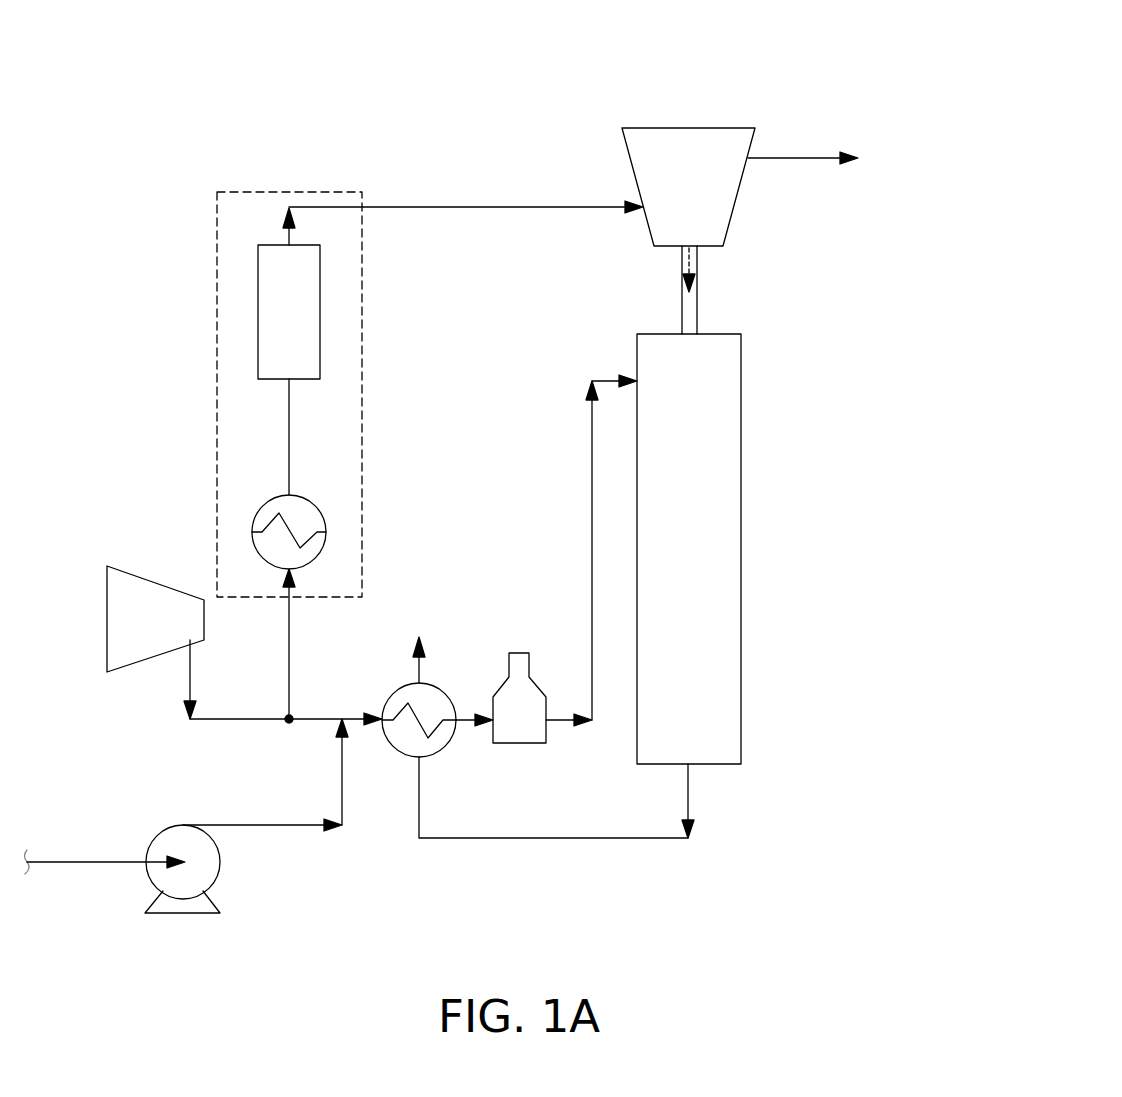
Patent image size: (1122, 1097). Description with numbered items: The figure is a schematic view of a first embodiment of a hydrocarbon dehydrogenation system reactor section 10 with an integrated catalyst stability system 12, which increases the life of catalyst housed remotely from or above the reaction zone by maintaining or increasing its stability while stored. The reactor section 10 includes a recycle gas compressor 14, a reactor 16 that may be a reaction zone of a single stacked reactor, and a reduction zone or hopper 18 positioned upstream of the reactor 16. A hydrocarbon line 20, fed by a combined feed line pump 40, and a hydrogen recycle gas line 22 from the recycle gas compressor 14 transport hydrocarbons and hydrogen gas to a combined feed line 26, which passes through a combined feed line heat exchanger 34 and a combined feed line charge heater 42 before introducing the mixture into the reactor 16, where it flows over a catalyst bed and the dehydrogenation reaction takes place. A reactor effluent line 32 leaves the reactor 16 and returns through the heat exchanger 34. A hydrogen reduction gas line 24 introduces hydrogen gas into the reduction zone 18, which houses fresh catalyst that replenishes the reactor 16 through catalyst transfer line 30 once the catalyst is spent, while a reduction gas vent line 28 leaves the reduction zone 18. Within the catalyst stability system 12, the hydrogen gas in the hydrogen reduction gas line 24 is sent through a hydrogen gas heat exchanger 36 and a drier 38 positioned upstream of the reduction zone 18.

The hydrocarbon dehydrogenation system reactor section 10 is at (750, 36).
The catalyst stability system 12 is at (196, 209).
The recycle gas compressor 14 is at (118, 672).
The reactor 16 is at (725, 334).
The reduction zone 18 is at (741, 128).
The hydrocarbon line 20 is at (263, 826).
The hydrogen recycle gas line 22 is at (232, 722).
The hydrogen reduction gas line 24 is at (290, 643).
The combined feed line 26 is at (463, 724).
The reduction gas vent line 28 is at (833, 158).
The catalyst transfer line 30 is at (700, 278).
The reactor effluent line 32 is at (553, 840).
The combined feed line heat exchanger 34 is at (440, 688).
The hydrogen gas heat exchanger 36 is at (280, 495).
The drier 38 is at (275, 244).
The combined feed line pump 40 is at (168, 827).
The combined feed line charge heater 42 is at (521, 652).